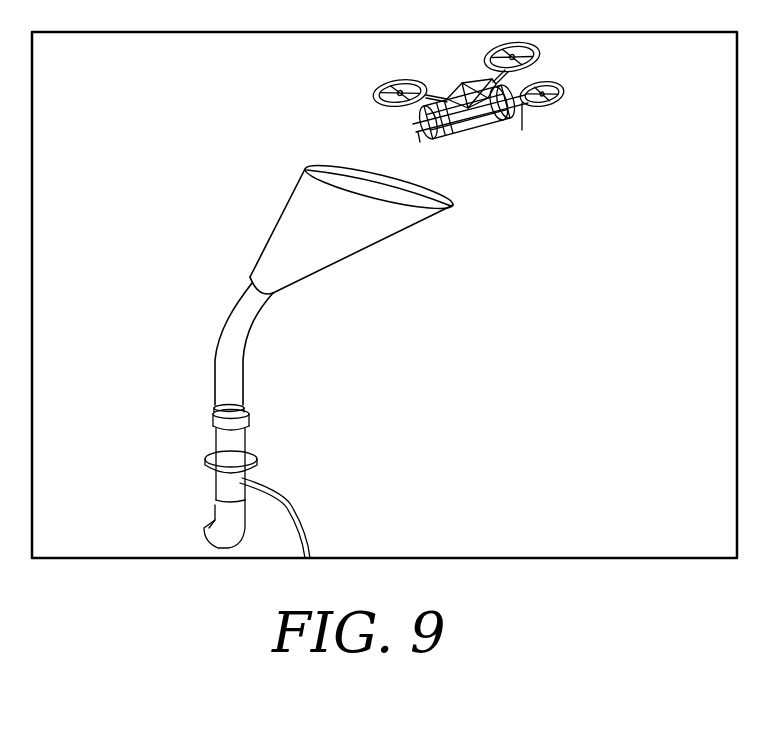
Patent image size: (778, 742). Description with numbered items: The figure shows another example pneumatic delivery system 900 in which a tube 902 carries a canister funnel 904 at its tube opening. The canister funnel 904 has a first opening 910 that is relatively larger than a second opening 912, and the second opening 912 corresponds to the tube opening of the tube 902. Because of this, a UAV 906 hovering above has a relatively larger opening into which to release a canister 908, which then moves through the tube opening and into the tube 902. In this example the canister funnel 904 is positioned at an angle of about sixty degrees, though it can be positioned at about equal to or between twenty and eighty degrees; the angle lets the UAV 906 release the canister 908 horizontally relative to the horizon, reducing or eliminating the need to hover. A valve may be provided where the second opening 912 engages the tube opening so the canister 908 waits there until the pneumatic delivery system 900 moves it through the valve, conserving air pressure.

The pneumatic delivery system 900 is at (145, 373).
The tube 902 is at (247, 428).
The canister funnel 904 is at (355, 237).
The UAV 906 is at (547, 73).
The canister 908 is at (540, 112).
The first opening 910 is at (327, 167).
The second opening 912 is at (250, 292).